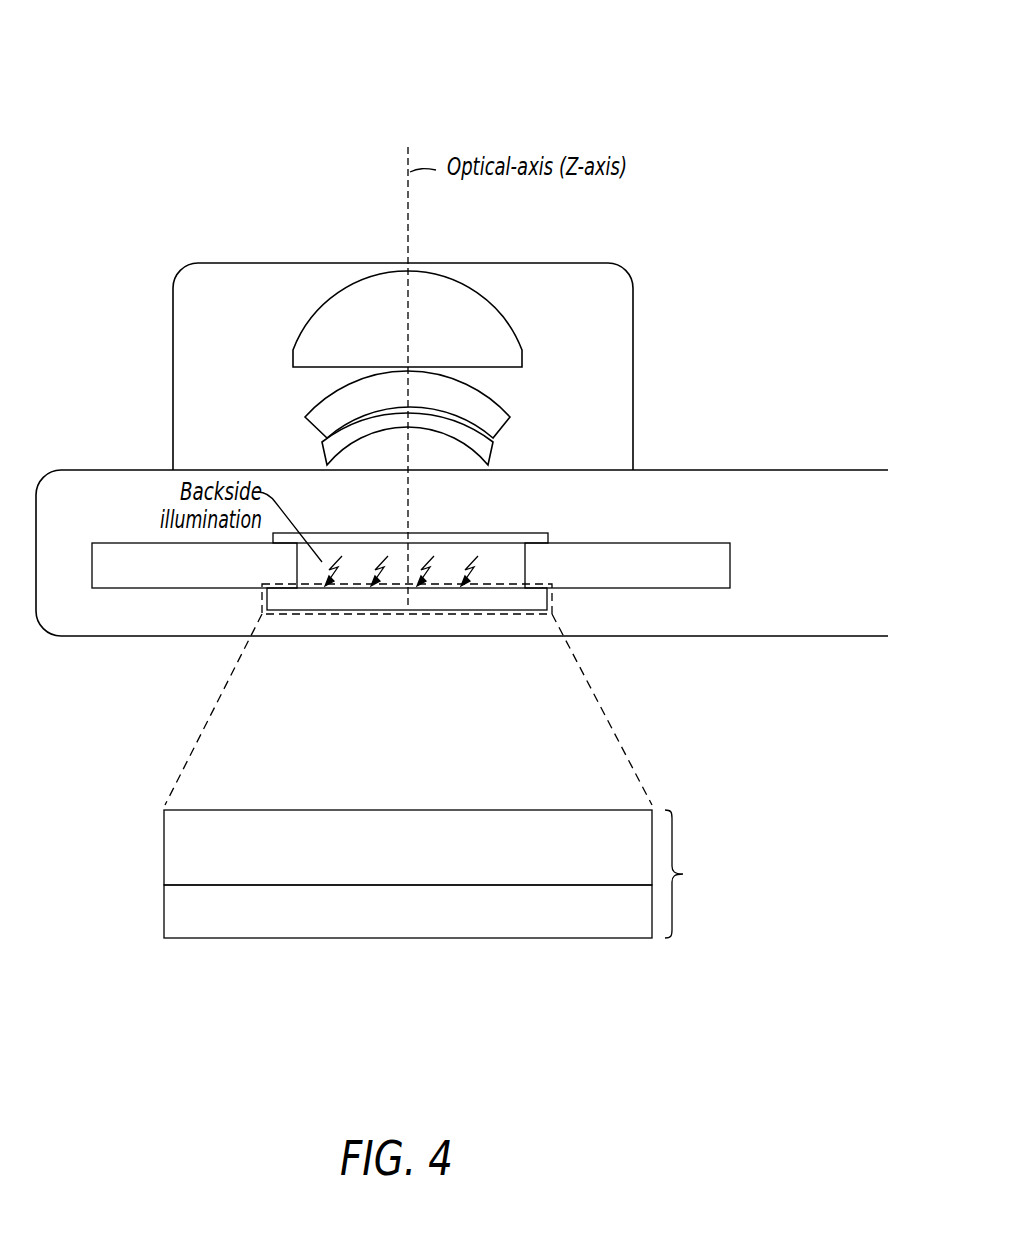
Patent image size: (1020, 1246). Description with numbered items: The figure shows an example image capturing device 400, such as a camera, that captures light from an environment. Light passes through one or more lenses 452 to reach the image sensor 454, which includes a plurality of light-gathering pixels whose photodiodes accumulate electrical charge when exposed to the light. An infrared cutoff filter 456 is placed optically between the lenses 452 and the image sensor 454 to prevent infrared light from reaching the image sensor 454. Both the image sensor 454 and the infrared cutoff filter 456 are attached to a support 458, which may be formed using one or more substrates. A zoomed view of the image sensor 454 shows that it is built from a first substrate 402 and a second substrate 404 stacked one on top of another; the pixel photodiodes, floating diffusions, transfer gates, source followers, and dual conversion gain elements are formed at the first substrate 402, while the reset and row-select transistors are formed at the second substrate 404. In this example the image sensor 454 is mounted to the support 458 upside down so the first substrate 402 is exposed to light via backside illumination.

The image capturing device 400 is at (628, 96).
The lenses 452 is at (289, 470).
The image sensor 454 is at (549, 604).
The infrared cutoff filter (IRCF) 456 is at (548, 538).
The support 458 is at (411, 565).
The first substrate 402 is at (471, 860).
The second substrate 404 is at (471, 925).